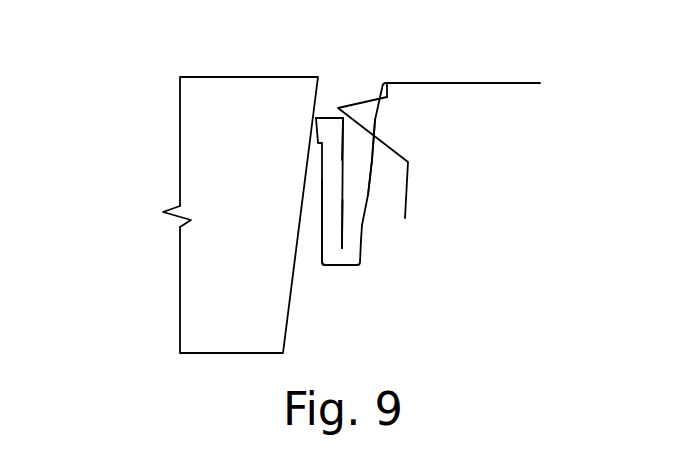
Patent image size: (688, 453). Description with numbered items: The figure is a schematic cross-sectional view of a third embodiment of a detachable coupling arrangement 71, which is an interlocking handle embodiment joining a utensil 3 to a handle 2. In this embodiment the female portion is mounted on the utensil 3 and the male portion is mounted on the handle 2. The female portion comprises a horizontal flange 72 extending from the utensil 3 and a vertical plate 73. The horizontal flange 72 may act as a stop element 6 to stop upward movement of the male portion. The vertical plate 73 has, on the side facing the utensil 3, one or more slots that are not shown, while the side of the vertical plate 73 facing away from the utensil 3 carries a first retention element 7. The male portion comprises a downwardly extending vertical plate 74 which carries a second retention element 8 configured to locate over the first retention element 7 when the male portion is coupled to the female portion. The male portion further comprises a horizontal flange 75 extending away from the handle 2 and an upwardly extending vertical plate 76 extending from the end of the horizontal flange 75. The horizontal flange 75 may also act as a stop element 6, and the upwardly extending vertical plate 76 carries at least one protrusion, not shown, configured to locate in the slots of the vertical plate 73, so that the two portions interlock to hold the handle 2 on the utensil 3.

The detachable coupling arrangement 71 is at (111, 113).
The utensil 3 is at (218, 97).
The handle 2 is at (473, 83).
The stop element 6 is at (318, 113).
The horizontal flange 72 is at (325, 114).
The first retention element 7 is at (341, 119).
The second retention element 8 is at (397, 151).
The downwardly extending vertical plate 74 is at (372, 177).
The vertical plate 73 is at (343, 226).
The upwardly extending vertical plate 76 is at (322, 213).
The horizontal flange 75 is at (330, 266).